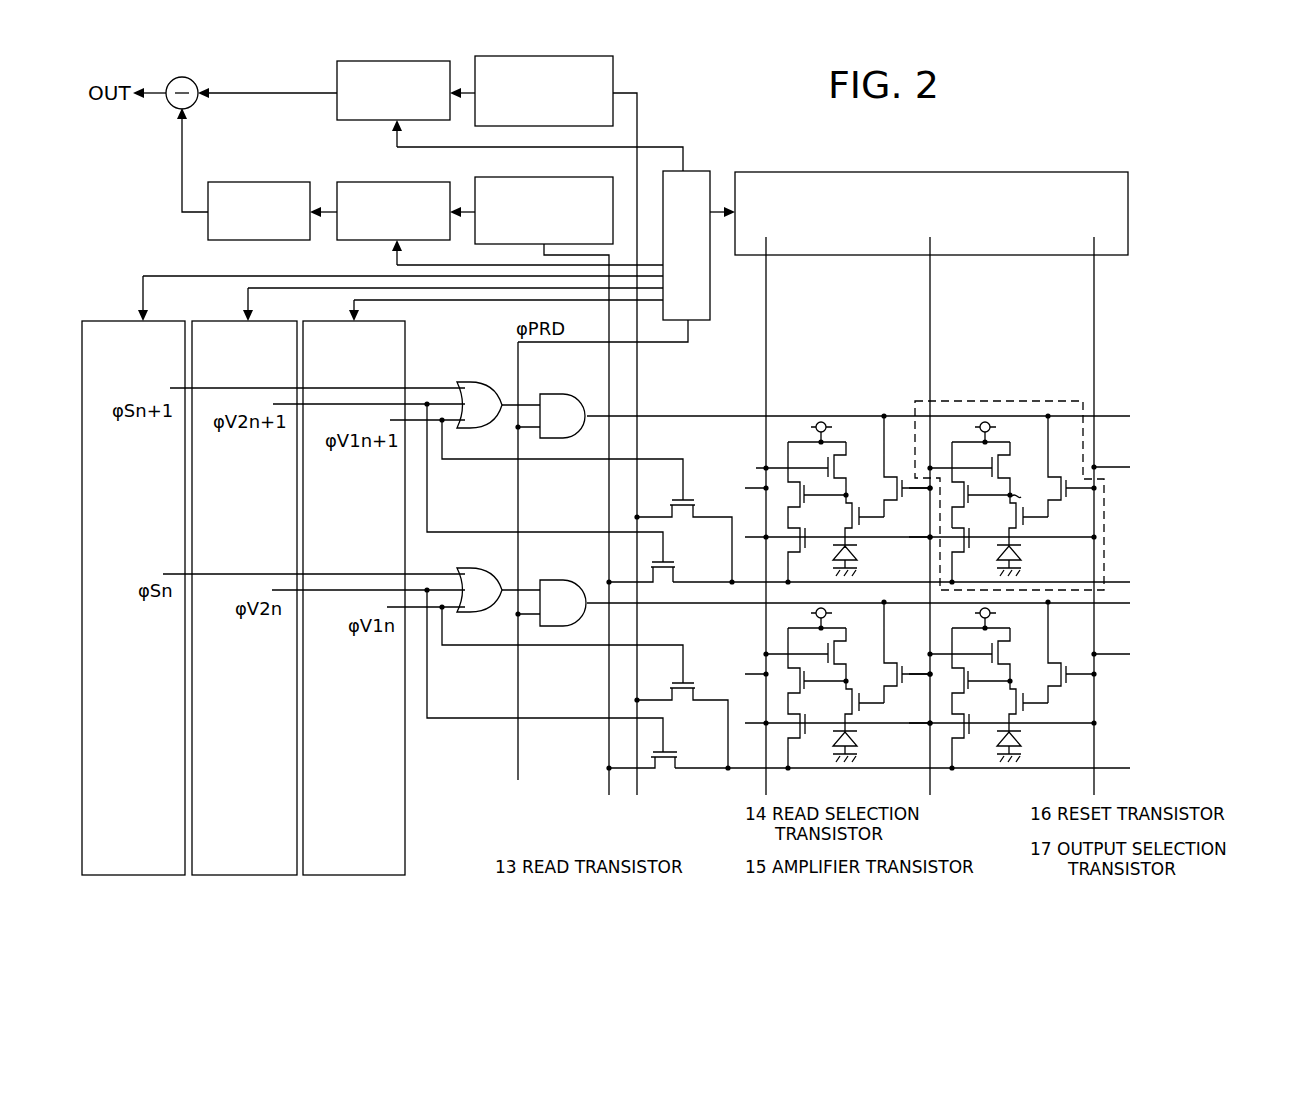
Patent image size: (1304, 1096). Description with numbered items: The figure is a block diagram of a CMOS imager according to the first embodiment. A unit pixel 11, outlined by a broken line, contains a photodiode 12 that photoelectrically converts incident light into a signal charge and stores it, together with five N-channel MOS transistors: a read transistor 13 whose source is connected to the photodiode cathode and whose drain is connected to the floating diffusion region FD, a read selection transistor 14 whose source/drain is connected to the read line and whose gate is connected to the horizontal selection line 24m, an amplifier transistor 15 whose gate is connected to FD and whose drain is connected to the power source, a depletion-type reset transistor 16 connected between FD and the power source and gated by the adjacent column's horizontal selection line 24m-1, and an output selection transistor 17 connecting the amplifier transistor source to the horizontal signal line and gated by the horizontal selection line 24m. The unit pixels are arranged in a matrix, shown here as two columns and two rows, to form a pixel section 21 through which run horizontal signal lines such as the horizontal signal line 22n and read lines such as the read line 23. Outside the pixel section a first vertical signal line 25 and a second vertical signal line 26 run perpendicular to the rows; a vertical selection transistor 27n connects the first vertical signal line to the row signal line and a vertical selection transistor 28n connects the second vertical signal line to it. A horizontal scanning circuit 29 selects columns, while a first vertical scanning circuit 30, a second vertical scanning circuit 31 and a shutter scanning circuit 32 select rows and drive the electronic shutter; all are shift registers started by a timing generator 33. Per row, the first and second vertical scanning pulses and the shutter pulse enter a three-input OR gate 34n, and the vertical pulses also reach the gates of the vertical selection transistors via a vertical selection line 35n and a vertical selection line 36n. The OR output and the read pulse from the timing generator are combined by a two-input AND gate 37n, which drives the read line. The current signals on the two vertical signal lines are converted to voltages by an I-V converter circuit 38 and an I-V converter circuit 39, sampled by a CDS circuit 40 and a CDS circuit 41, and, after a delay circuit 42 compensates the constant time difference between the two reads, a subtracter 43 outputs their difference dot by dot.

The unit pixel 11 is at (1086, 495).
The photodiode 12 is at (1022, 562).
The read transistor 13 is at (1030, 520).
The read selection transistor 14 is at (1054, 482).
The amplifier transistor 15 is at (963, 505).
The reset transistor 16 is at (1001, 468).
The output selection transistor 17 is at (960, 548).
The pixel section 21 is at (1011, 565).
The horizontal signal line 22n is at (1115, 767).
The read line 23 is at (1108, 603).
The horizontal selection line 24m is at (1097, 279).
The horizontal selection line 24m-1 is at (933, 300).
The first vertical signal line 25 is at (635, 778).
The second vertical signal line 26 is at (608, 778).
The vertical selection transistor 27n is at (682, 698).
The vertical selection transistor 28n is at (666, 775).
The horizontal scanning circuit 29 is at (1070, 172).
The first vertical scanning circuit 30 is at (334, 321).
The second vertical scanning circuit 31 is at (213, 321).
The shutter scanning circuit 32 is at (107, 321).
The timing generator 33 is at (700, 171).
The three-input OR gate 34n is at (461, 568).
The vertical selection line 35n is at (553, 646).
The vertical selection line 36n is at (550, 720).
The two-input AND gate 37n is at (557, 580).
The I-V converter circuit 38 is at (613, 66).
The I-V converter circuit 39 is at (537, 177).
The CDS circuit 40 is at (338, 72).
The CDS circuit 41 is at (366, 182).
The delay circuit 42 is at (246, 182).
The subtracter 43 is at (193, 83).